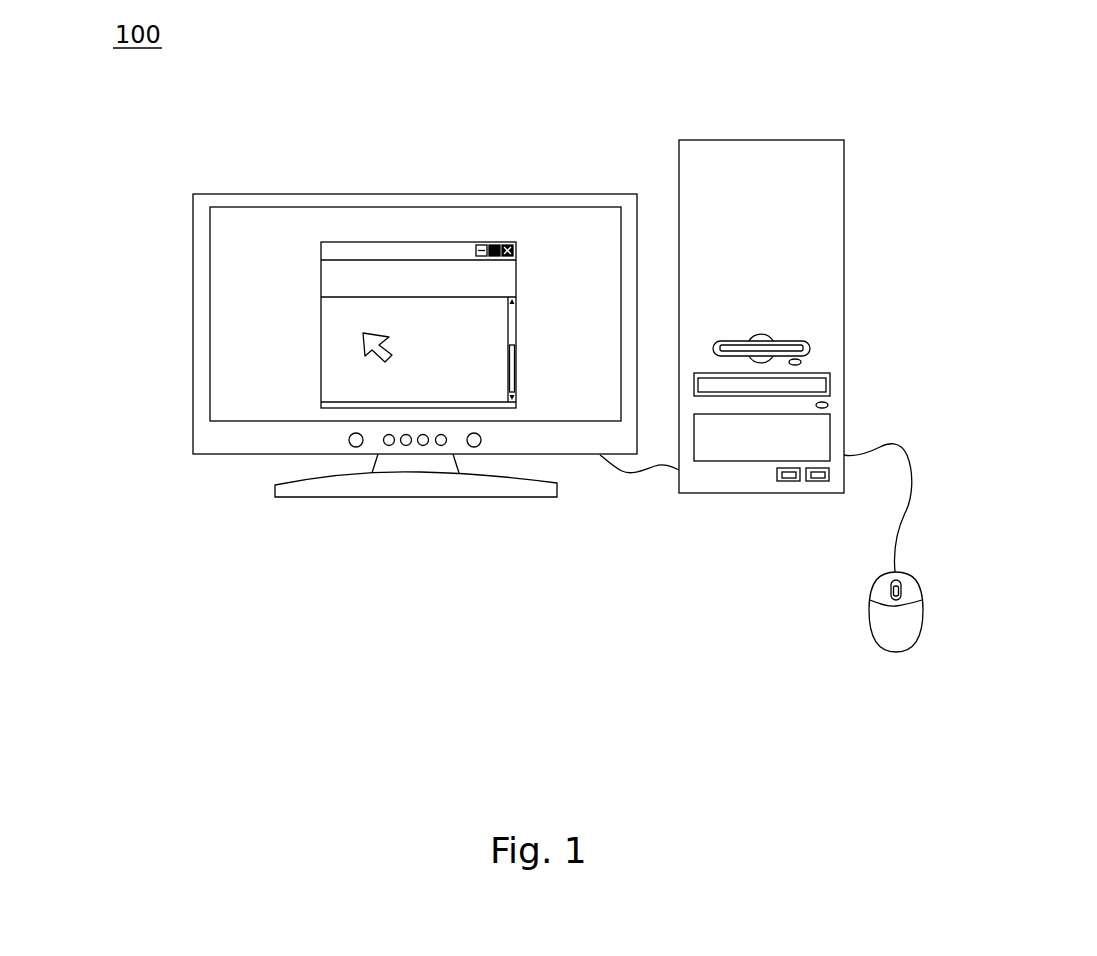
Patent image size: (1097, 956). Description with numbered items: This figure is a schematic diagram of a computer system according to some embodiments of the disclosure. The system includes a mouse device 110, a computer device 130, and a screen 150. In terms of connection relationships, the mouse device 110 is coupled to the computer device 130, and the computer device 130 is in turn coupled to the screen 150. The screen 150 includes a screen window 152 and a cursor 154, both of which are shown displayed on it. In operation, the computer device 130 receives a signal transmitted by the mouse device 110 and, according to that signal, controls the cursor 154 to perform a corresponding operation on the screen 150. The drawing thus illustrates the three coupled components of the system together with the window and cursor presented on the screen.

The mouse device 110 is at (957, 566).
The computer device 130 is at (740, 100).
The screen 150 is at (490, 188).
The screen window 152 is at (376, 276).
The cursor 154 is at (360, 345).